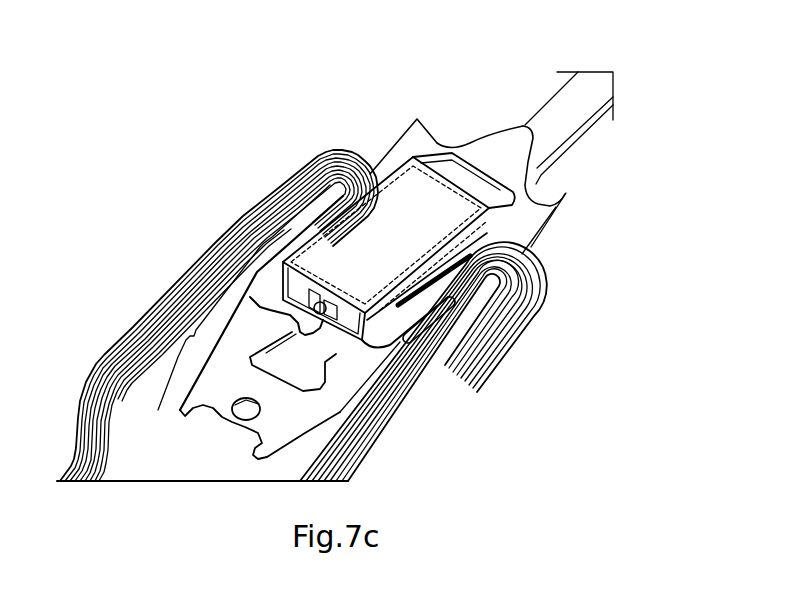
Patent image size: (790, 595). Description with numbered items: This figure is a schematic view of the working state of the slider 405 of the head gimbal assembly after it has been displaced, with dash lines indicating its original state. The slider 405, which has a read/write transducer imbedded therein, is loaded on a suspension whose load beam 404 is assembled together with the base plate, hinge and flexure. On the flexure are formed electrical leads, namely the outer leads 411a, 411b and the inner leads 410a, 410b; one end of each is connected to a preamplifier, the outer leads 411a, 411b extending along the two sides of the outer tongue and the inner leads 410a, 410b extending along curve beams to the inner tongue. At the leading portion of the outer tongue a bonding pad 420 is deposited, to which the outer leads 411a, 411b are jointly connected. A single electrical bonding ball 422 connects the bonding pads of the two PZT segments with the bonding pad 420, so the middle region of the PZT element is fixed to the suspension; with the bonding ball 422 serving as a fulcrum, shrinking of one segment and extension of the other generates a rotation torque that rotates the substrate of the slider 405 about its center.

The load beam 404 is at (565, 107).
The slider 405 is at (368, 227).
The inner lead 410a is at (477, 277).
The inner lead 410b is at (247, 222).
The outer lead 411a is at (400, 340).
The outer lead 411b is at (282, 299).
The bonding pad 420 is at (320, 314).
The electrical bonding ball 422 is at (325, 318).